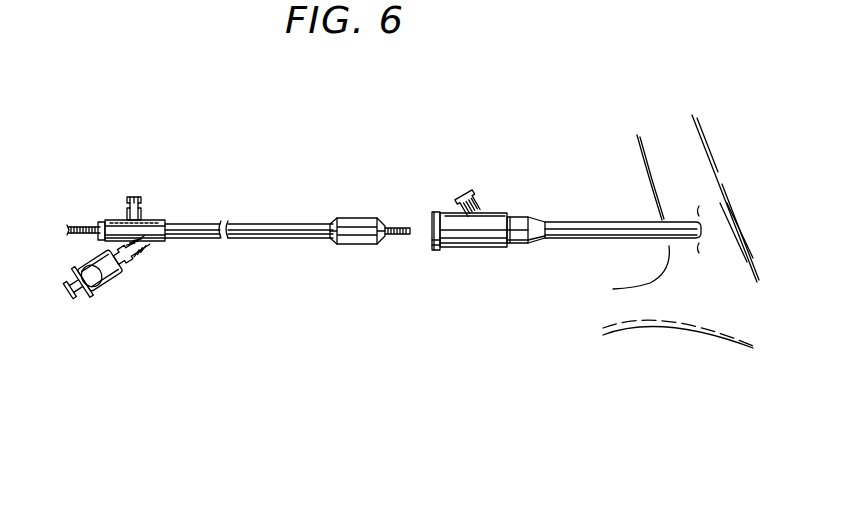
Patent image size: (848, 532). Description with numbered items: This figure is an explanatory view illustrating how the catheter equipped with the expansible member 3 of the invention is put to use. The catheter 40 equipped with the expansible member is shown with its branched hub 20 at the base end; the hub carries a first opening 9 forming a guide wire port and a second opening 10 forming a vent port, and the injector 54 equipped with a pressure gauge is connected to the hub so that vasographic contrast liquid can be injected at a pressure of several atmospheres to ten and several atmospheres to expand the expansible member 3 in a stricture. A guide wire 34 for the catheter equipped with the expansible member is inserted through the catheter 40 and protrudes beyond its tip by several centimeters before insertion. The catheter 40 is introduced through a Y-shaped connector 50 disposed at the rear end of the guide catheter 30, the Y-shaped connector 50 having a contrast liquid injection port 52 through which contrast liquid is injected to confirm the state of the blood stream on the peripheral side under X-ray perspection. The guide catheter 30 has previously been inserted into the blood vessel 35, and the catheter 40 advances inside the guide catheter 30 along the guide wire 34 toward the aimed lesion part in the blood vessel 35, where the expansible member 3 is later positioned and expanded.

The expansible member 3 is at (360, 218).
The first opening 9 is at (100, 241).
The second opening 10 is at (142, 197).
The branched hub 20 is at (147, 241).
The guide catheter 30 is at (607, 221).
The guide wire for catheter equipped with expansible member 34 is at (78, 228).
The blood vessel 35 is at (693, 182).
The catheter equipped with expansible member 40 is at (253, 222).
The Y-shaped connector 50 is at (468, 235).
The contrast liquid injection port 52 is at (465, 193).
The injector 54 is at (90, 275).